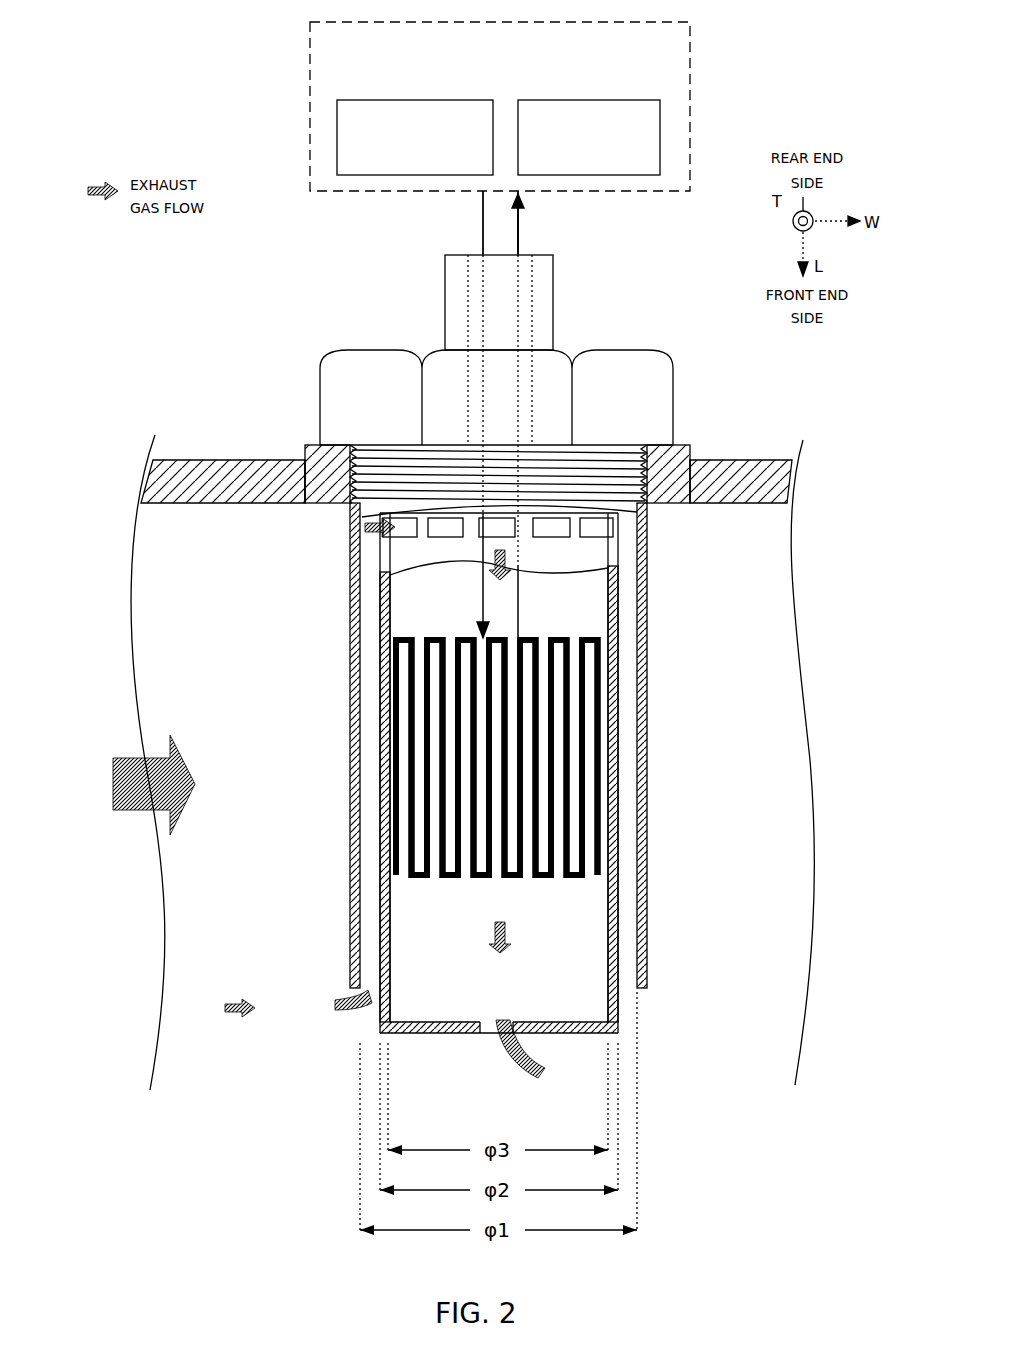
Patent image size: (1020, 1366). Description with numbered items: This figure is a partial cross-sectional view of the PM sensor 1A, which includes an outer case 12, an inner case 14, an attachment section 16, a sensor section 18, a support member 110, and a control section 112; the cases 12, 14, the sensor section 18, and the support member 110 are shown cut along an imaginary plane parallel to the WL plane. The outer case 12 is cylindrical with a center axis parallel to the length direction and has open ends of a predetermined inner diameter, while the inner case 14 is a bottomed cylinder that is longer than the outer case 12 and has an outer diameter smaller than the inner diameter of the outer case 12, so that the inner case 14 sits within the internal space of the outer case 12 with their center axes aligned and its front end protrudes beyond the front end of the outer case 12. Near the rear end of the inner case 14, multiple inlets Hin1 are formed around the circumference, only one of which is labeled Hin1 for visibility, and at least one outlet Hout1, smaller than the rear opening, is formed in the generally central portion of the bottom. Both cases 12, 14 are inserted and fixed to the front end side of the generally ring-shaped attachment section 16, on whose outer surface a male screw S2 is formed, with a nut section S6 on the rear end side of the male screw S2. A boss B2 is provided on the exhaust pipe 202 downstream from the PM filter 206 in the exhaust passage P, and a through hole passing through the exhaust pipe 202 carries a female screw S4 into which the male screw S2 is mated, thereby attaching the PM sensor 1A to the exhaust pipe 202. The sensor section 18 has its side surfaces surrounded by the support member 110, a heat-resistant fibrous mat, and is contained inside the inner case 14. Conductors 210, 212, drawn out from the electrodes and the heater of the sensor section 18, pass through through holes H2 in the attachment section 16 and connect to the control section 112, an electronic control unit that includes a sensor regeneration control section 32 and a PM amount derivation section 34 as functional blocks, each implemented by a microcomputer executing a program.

The PM sensor 1A is at (146, 51).
The control section 112 is at (690, 48).
The sensor regeneration control section 32 is at (448, 100).
The PM amount derivation section 34 is at (628, 100).
The conductor 210 is at (470, 210).
The conductor 212 is at (500, 223).
The through hole H2 is at (510, 256).
The attachment section 16 is at (559, 412).
The nut section S6 is at (665, 385).
The male screw S2 is at (546, 439).
The female screw S4 is at (338, 504).
The boss B2 is at (310, 445).
The exhaust pipe 202 is at (205, 458).
The outer case 12 is at (352, 960).
The inner case 14 is at (382, 1030).
The inlet Hin1 is at (621, 524).
The sensor section 18 is at (606, 640).
The support member 110 is at (612, 664).
The PM filter 206 is at (72, 785).
The exhaust passage P is at (190, 892).
The outlet Hout1 is at (482, 1052).